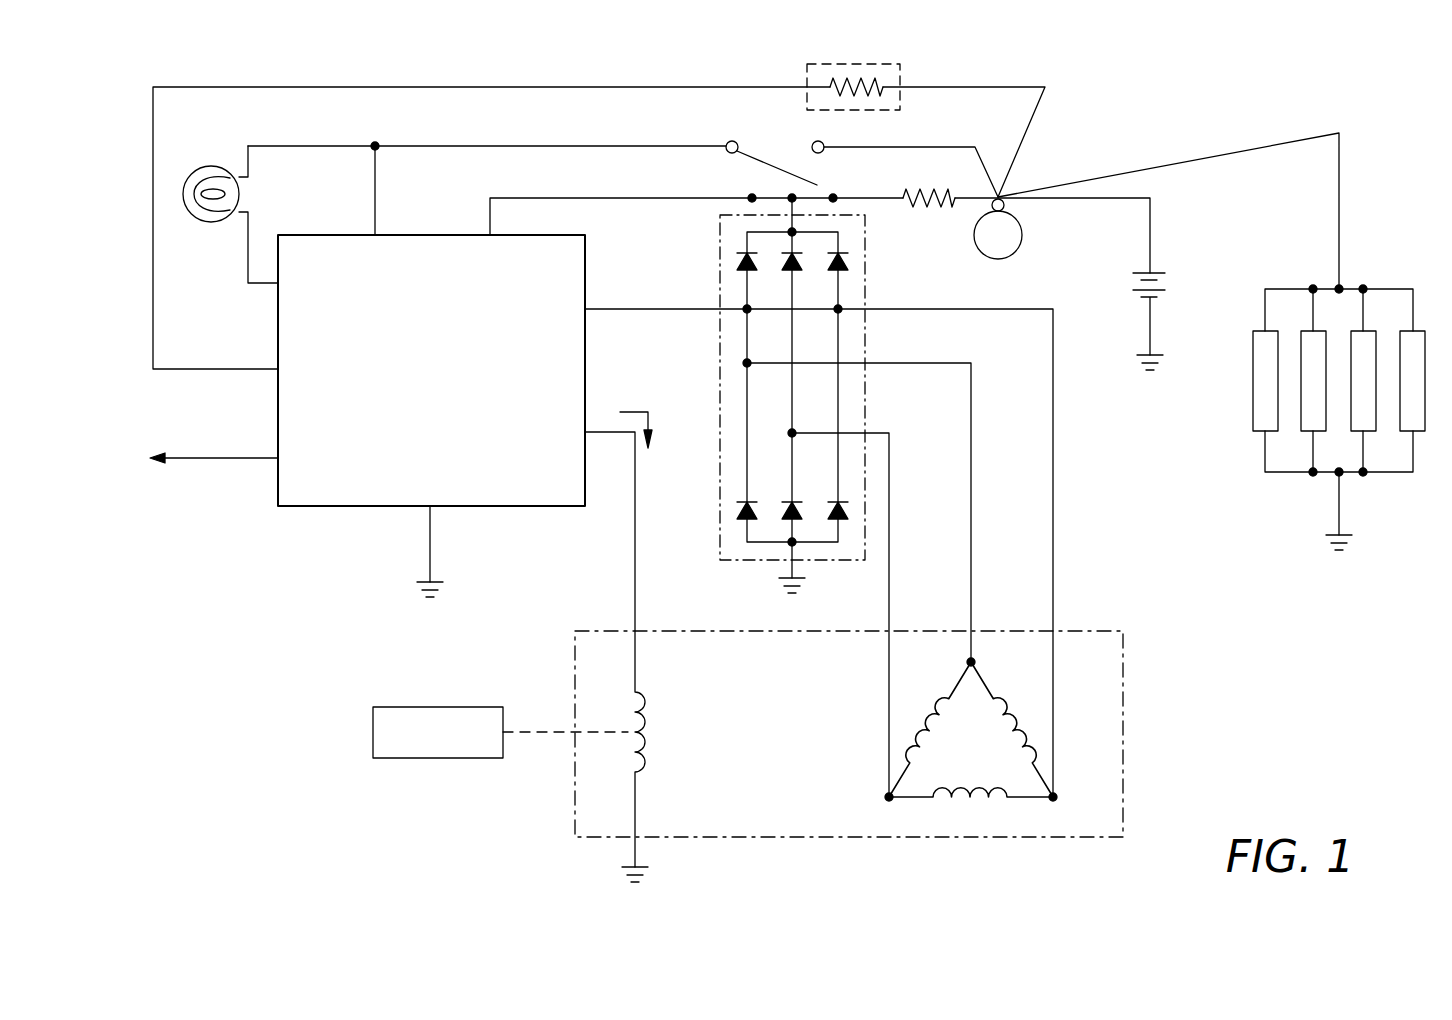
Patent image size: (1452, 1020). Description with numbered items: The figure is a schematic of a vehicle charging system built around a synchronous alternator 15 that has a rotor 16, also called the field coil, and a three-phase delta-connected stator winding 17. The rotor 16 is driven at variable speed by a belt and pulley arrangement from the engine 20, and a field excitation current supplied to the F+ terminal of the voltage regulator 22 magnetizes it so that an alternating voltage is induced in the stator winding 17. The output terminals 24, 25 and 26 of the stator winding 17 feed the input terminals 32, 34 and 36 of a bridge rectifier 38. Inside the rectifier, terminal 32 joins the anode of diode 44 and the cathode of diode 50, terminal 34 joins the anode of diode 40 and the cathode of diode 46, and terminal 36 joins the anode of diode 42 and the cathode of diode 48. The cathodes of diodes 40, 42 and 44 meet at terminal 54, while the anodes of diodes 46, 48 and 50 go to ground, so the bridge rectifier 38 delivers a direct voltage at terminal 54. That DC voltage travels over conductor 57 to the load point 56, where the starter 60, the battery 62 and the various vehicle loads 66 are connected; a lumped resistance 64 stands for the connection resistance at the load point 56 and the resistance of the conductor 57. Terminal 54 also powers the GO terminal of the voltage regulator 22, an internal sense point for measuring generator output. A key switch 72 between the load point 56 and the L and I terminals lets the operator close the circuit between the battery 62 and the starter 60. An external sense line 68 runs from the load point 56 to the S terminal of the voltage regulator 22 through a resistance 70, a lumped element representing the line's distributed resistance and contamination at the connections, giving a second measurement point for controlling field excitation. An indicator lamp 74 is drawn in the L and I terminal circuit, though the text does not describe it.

The synchronous alternator 15 is at (873, 837).
The rotor 16 is at (625, 755).
The three-phase delta-connected stator winding 17 is at (990, 686).
The engine 20 is at (432, 758).
The voltage regulator 22 is at (425, 234).
The output terminal 24 is at (1054, 798).
The output terminal 25 is at (968, 662).
The output terminal 26 is at (886, 797).
The input terminal 32 is at (836, 311).
The input terminal 34 is at (749, 362).
The input terminal 36 is at (790, 432).
The bridge rectifier 38 is at (866, 335).
The diode 40 is at (737, 262).
The diode 42 is at (782, 268).
The diode 44 is at (828, 268).
The diode 46 is at (738, 510).
The diode 48 is at (782, 509).
The diode 50 is at (830, 509).
The terminal 54 is at (792, 196).
The load point 56 is at (1007, 190).
The conductor 57 is at (843, 196).
The starter 60 is at (1023, 235).
The battery 62 is at (1163, 293).
The lumped resistance 64 is at (925, 203).
The vehicle loads 66 is at (1253, 392).
The external sense line 68 is at (456, 87).
The resistance 70 is at (852, 80).
The key switch 72 is at (755, 152).
The indicator lamp 74 is at (197, 167).